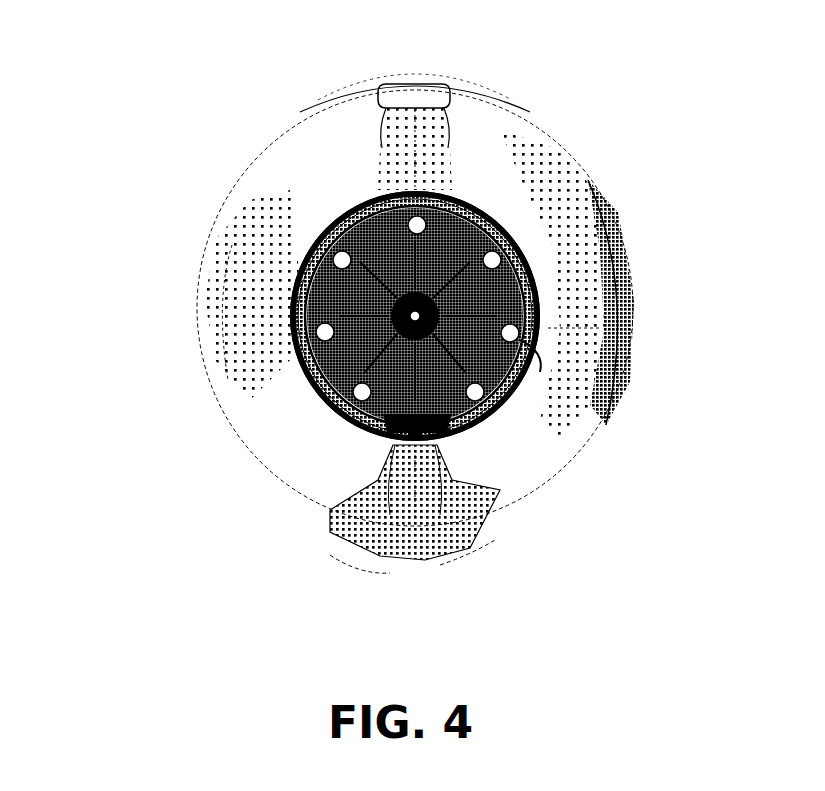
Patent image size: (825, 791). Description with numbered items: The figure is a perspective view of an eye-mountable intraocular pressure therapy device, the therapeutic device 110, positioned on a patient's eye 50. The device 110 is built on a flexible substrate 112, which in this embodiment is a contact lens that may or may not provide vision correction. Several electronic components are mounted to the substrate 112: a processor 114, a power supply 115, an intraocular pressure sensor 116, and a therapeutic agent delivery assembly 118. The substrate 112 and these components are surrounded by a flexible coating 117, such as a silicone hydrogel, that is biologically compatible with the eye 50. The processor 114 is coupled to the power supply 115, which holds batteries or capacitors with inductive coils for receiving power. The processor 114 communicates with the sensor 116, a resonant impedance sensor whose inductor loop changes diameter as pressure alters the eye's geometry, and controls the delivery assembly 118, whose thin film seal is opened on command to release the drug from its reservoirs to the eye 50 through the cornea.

The eye 50 is at (616, 187).
The therapeutic device 110 is at (422, 318).
The flexible substrate 112 is at (307, 269).
The flexible coating 117 is at (415, 316).
The processor 114 is at (366, 432).
The power supply 115 is at (455, 440).
The intraocular pressure sensor 116 is at (553, 363).
The therapeutic agent delivery assembly 118 is at (302, 329).